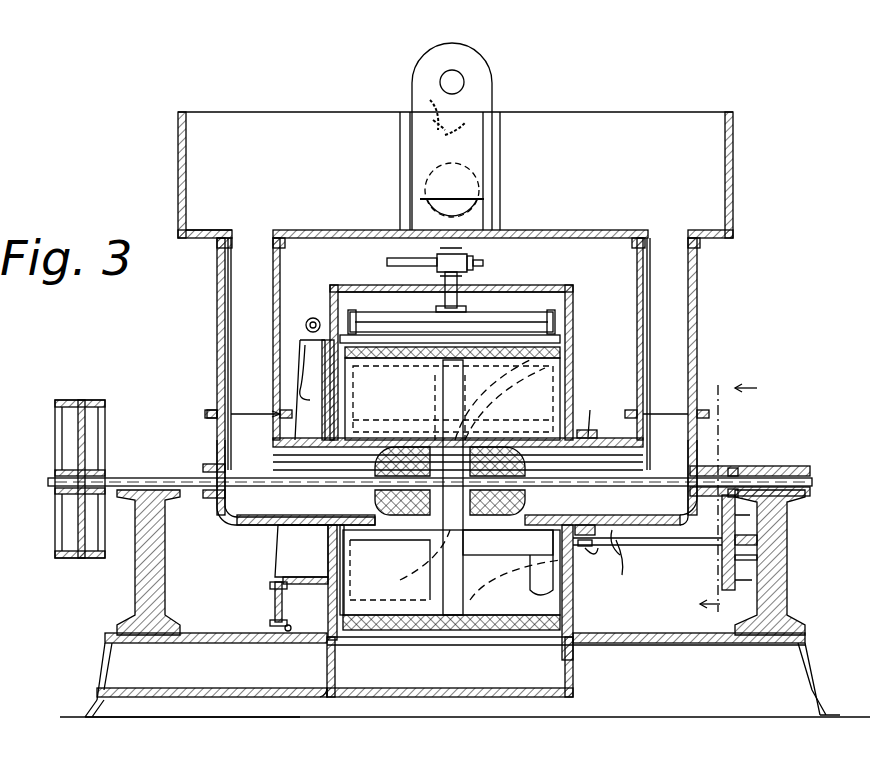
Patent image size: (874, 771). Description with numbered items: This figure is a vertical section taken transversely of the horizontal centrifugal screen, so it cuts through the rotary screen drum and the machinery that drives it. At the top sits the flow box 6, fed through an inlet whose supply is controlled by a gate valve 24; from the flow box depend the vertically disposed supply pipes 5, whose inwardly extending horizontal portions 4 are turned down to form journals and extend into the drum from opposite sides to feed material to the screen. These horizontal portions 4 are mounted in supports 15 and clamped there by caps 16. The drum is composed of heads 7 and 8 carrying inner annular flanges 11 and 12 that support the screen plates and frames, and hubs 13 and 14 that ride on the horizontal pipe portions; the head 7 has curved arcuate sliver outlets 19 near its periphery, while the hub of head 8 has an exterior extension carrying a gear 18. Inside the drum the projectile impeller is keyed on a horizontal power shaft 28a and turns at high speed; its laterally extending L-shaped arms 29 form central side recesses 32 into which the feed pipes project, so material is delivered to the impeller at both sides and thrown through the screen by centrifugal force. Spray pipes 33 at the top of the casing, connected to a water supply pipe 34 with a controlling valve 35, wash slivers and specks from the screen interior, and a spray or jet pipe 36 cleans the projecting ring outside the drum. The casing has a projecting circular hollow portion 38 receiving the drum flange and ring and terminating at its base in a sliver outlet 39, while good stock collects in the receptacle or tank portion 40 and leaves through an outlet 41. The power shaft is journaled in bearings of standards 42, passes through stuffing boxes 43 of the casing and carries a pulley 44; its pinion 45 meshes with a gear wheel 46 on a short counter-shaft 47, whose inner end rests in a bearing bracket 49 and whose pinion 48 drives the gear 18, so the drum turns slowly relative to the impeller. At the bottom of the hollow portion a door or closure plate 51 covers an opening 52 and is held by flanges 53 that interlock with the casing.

The horizontal arms or portions 4 is at (667, 495).
The supply pipes 5 is at (670, 342).
The flow box 6 is at (735, 178).
The drum head 7 is at (330, 415).
The drum head 8 is at (555, 562).
The inner annular flange 11 is at (360, 340).
The inner annular flange 12 is at (563, 364).
The hub 13 is at (402, 481).
The hub 14 is at (490, 400).
The supports 15 is at (312, 526).
The caps 16 is at (608, 432).
The gear 18 is at (631, 567).
The sliver outlets 19 is at (451, 580).
The gate valve 24 is at (489, 73).
The power shaft 28a is at (790, 480).
The L-shaped arms 29 is at (351, 570).
The central side spaces or recesses 32 is at (497, 481).
The spray pipes 33 is at (505, 320).
The water supply pipe 34 is at (458, 296).
The controlling valve 35 is at (445, 252).
The spray or jet pipe 36 is at (306, 327).
The circular hollow portion 38 is at (314, 390).
The sliver outlet 39 is at (465, 675).
The receptacle or tank portion 40 is at (450, 667).
The outlet 41 is at (415, 680).
The standards 42 is at (140, 600).
The stuffing boxes 43 is at (203, 460).
The pulley 44 is at (100, 410).
The pinion 45 is at (745, 476).
The gear wheel 46 is at (740, 580).
The counter-shaft 47 is at (647, 559).
The gear wheel or pinion 48 is at (588, 550).
The bearing bracket 49 is at (598, 552).
The door or closure plate 51 is at (274, 605).
The opening 52 is at (292, 604).
The flanges 53 is at (284, 630).